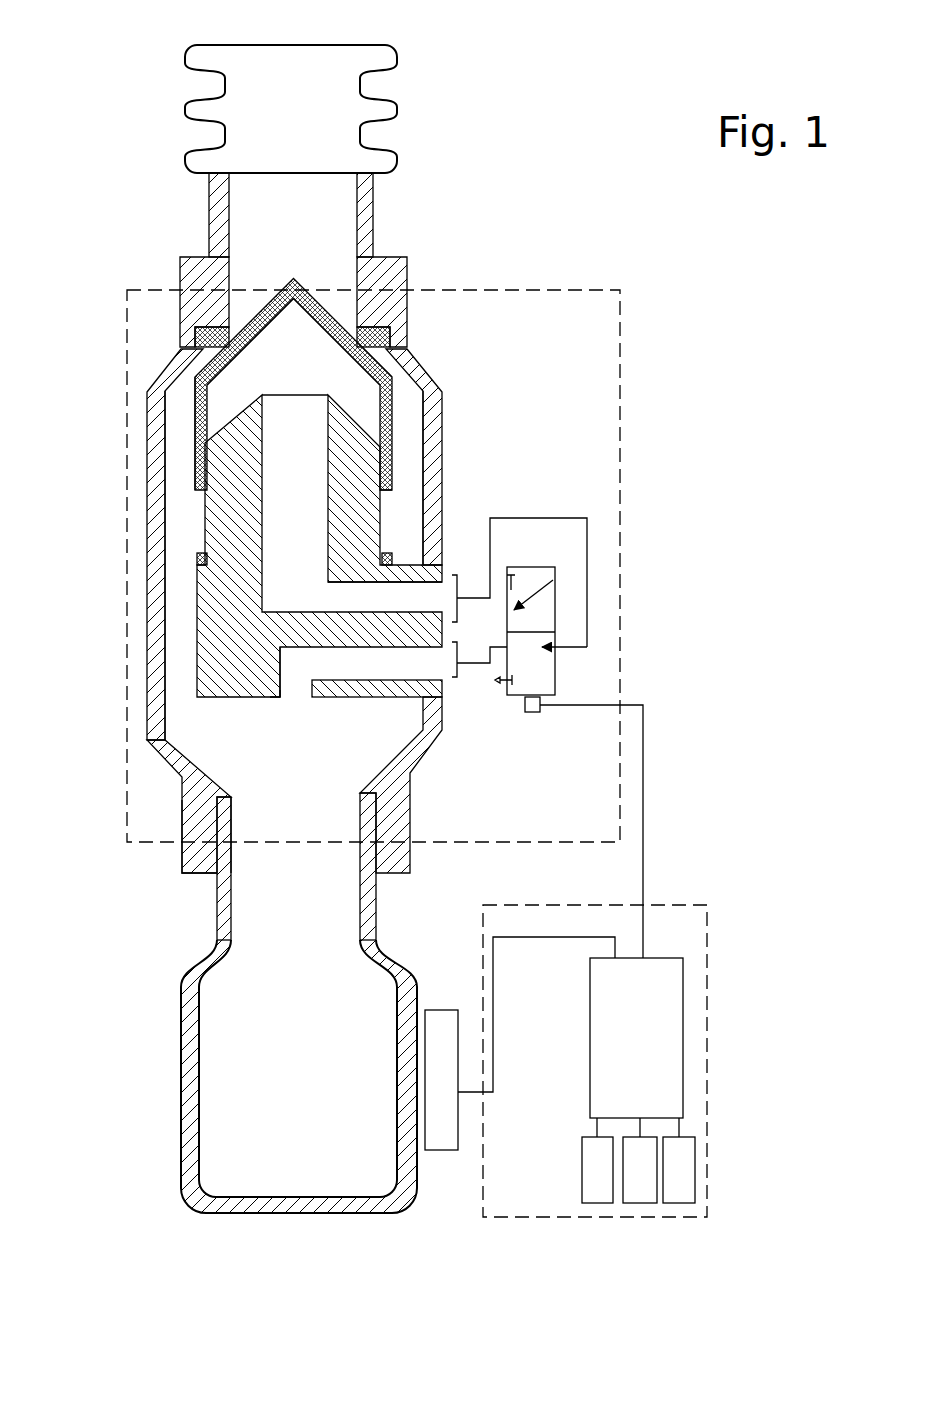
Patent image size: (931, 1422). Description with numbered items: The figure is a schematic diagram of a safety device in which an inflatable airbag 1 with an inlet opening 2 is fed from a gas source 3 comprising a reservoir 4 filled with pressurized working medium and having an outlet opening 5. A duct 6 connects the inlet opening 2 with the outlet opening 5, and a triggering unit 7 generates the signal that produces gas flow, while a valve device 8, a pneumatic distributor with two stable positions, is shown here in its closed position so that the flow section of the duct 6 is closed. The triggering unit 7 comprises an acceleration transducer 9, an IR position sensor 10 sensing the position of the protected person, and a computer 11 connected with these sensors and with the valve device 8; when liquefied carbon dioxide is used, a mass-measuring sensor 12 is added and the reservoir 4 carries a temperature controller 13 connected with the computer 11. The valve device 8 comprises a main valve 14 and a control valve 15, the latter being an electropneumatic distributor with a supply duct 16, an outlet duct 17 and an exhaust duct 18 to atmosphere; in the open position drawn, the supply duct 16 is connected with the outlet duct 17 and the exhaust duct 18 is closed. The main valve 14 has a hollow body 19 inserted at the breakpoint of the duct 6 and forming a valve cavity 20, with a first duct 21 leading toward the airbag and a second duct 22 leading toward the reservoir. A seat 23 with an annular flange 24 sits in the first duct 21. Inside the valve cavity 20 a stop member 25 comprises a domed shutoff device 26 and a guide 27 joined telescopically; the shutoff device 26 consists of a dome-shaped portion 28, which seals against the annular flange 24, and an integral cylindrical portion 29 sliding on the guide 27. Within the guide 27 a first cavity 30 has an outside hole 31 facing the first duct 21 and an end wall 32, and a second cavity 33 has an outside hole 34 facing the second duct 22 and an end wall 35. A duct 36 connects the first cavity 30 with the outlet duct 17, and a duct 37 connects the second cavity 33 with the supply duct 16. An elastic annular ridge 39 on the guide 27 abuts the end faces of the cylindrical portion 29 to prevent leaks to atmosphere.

The inflatable airbag 1 is at (403, 57).
The inlet opening 2 is at (330, 173).
The gas source 3 is at (160, 1078).
The reservoir 4 is at (180, 1153).
The outlet opening 5 is at (312, 845).
The duct 6 is at (342, 207).
The triggering unit 7 is at (723, 943).
The valve device 8 is at (623, 363).
The acceleration transducer 9 is at (687, 1178).
The IR position sensor 10 is at (640, 1192).
The computer 11 is at (683, 1060).
The mass-measuring sensor 12 is at (593, 1190).
The temperature controller 13 is at (443, 1140).
The main valve 14 is at (138, 713).
The control valve 15 is at (578, 680).
The supply duct 16 is at (473, 660).
The outlet duct 17 is at (587, 647).
The exhaust duct 18 is at (512, 692).
The hollow body 19 is at (155, 520).
The valve cavity 20 is at (182, 618).
The first duct 21 is at (243, 297).
The second duct 22 is at (260, 800).
The seat 23 is at (372, 336).
The annular flange 24 is at (366, 345).
The stop member 25 is at (411, 438).
The domed shutoff device 26 is at (190, 407).
The guide 27 is at (384, 490).
The dome-shaped portion 28 is at (310, 300).
The cylindrical portion 29 is at (197, 443).
The first cavity 30 is at (305, 497).
The outside hole 31 is at (281, 392).
The end wall 32 is at (290, 617).
The second cavity 33 is at (283, 670).
The outside hole 34 is at (283, 693).
The end wall 35 is at (297, 645).
The duct 36 is at (392, 597).
The duct 37 is at (397, 662).
The annular ridge 39 is at (387, 557).